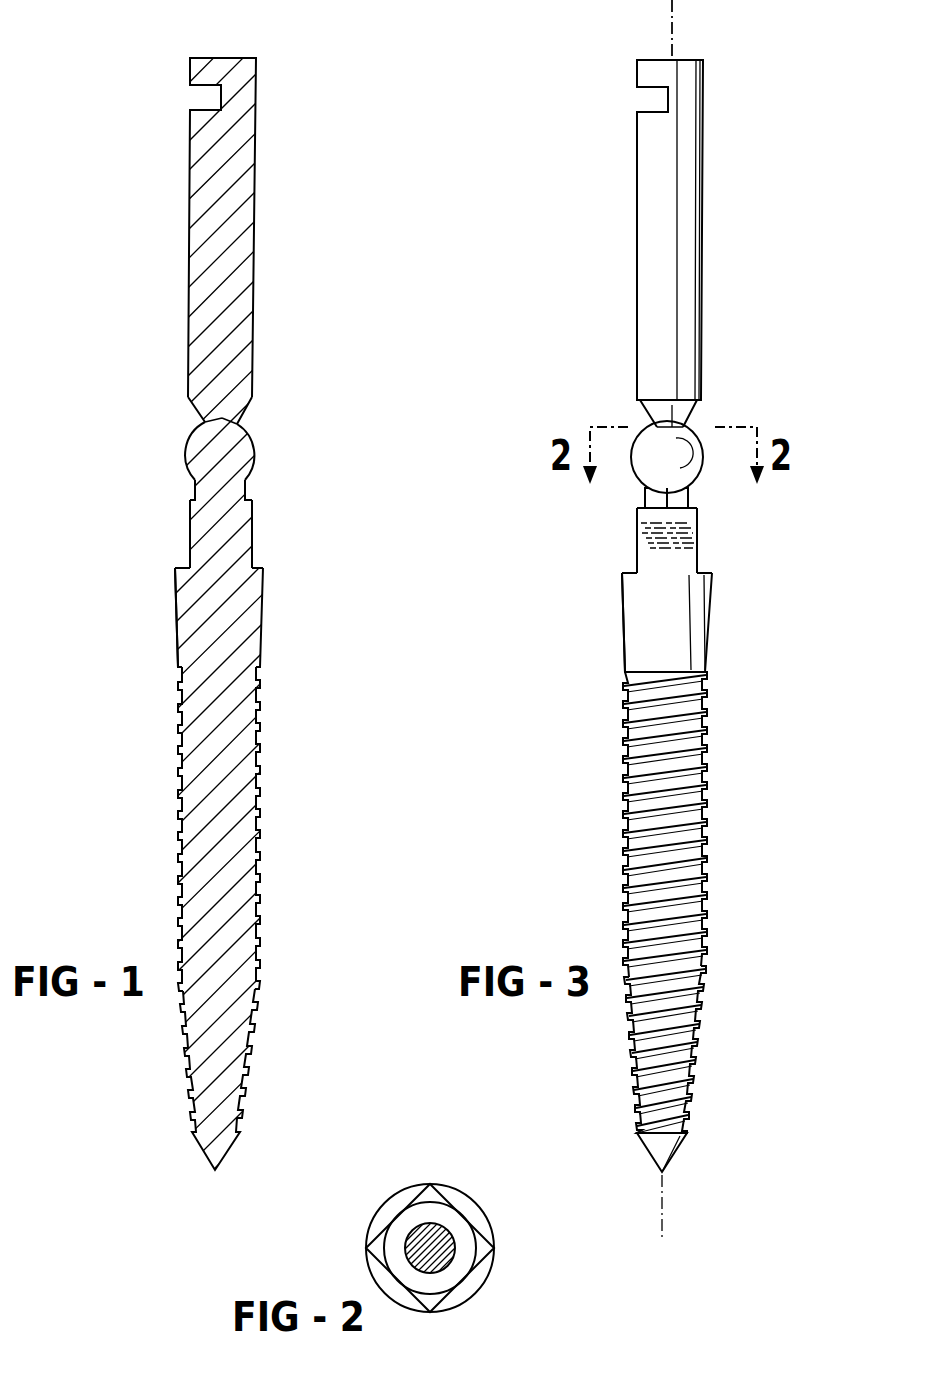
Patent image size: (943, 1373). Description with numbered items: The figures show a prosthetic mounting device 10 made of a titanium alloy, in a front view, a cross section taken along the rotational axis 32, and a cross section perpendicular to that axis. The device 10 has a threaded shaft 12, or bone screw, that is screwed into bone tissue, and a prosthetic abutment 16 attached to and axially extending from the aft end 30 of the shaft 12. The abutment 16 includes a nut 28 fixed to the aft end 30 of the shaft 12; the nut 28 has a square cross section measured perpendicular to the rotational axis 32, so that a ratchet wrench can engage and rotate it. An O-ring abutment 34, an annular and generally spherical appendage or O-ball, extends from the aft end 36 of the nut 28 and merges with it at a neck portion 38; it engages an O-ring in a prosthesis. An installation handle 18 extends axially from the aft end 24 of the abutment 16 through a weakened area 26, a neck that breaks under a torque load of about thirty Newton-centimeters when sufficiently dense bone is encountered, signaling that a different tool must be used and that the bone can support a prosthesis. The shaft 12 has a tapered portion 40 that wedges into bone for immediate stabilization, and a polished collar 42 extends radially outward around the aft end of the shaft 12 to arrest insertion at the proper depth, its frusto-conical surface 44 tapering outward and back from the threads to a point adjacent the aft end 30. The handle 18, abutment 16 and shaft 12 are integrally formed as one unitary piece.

In FIG. 1, the prosthetic mounting device 10 is at (320, 136).
In FIG. 3, the prosthetic mounting device 10 is at (770, 142).
In FIG. 2, the prosthetic mounting device 10 is at (524, 1216).
In FIG. 1, the threaded shaft 12 is at (235, 762).
In FIG. 3, the threaded shaft 12 is at (688, 795).
In FIG. 1, the prosthetic abutment 16 is at (248, 503).
In FIG. 3, the prosthetic abutment 16 is at (705, 537).
In FIG. 2, the prosthetic abutment 16 is at (391, 1210).
In FIG. 1, the installation handle 18 is at (248, 222).
In FIG. 3, the installation handle 18 is at (690, 238).
In FIG. 1, the aft end of the abutment 24 is at (207, 424).
In FIG. 3, the aft end of the abutment 24 is at (700, 425).
In FIG. 1, the weakened area 26 is at (225, 420).
In FIG. 3, the weakened area 26 is at (668, 428).
In FIG. 1, the nut 28 is at (228, 548).
In FIG. 3, the nut 28 is at (697, 550).
In FIG. 2, the nut 28 is at (490, 1248).
In FIG. 1, the aft end of the threaded shaft 30 is at (183, 568).
In FIG. 3, the aft end of the threaded shaft 30 is at (636, 572).
In FIG. 2, the aft end of the threaded shaft 30 is at (458, 1195).
In FIG. 3, the rotational axis 32 is at (672, 42).
In FIG. 1, the O-ring abutment 34 is at (205, 455).
In FIG. 3, the O-ring abutment 34 is at (620, 446).
In FIG. 1, the aft end of the nut 36 is at (222, 498).
In FIG. 3, the aft end of the nut 36 is at (640, 508).
In FIG. 1, the neck portion 38 is at (250, 497).
In FIG. 3, the neck portion 38 is at (690, 506).
In FIG. 1, the tapered portion 40 is at (232, 1060).
In FIG. 3, the tapered portion 40 is at (686, 1060).
In FIG. 1, the collar 42 is at (230, 632).
In FIG. 3, the collar 42 is at (683, 650).
In FIG. 2, the collar 42 is at (478, 1283).
In FIG. 1, the frusto-conical surface 44 is at (177, 618).
In FIG. 3, the frusto-conical surface 44 is at (630, 640).